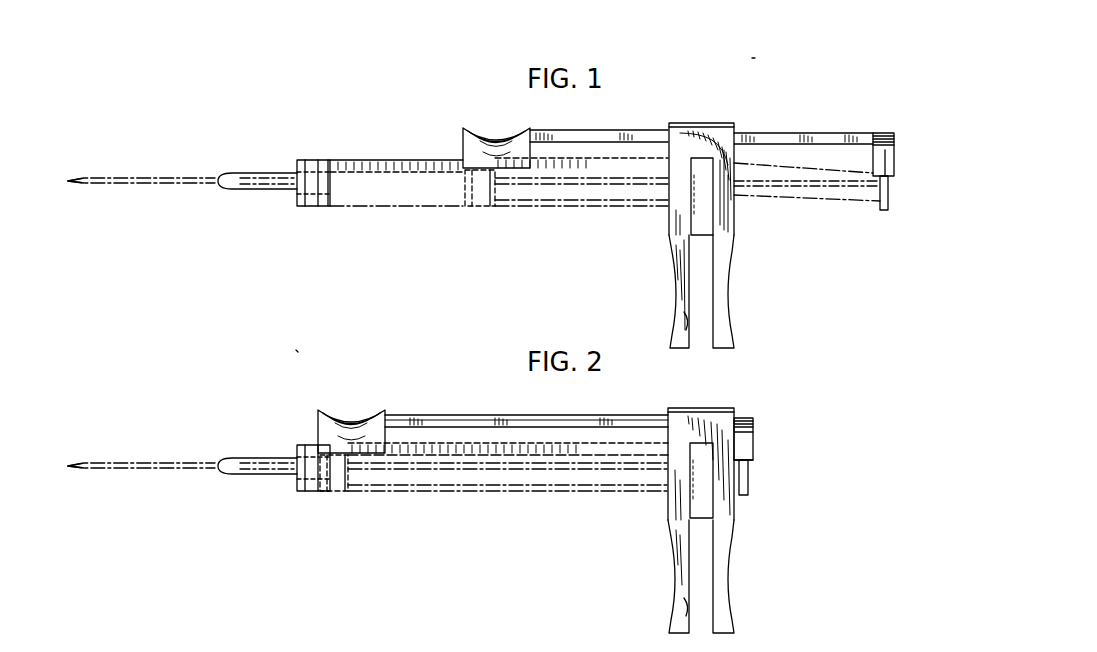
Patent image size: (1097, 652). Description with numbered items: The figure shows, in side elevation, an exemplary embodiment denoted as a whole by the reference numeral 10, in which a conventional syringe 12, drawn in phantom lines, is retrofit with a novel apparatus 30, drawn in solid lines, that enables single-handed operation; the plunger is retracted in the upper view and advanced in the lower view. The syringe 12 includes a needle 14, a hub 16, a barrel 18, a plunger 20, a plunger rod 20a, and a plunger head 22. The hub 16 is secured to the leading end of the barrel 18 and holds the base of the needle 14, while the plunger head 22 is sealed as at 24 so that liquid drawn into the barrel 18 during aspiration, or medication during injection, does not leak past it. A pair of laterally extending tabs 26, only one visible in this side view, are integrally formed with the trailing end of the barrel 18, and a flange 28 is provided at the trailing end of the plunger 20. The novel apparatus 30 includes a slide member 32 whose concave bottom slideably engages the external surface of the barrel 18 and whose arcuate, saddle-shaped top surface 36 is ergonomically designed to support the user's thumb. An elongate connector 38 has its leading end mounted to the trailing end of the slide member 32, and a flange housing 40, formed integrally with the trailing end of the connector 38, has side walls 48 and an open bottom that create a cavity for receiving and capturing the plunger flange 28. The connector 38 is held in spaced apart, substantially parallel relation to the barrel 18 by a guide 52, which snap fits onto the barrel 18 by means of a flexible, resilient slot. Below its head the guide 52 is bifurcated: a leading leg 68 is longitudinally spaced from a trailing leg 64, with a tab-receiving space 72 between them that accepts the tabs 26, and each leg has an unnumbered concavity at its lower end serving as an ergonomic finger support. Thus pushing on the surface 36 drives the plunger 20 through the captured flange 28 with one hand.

In FIG. 1, the exemplary embodiment of the invention 10 is at (762, 52).
In FIG. 2, the exemplary embodiment of the invention 10 is at (298, 352).
In FIG. 1, the syringe 12 is at (340, 150).
In FIG. 2, the syringe 12 is at (452, 490).
In FIG. 1, the needle 14 is at (160, 177).
In FIG. 2, the needle 14 is at (160, 462).
In FIG. 1, the hub 16 is at (274, 176).
In FIG. 2, the hub 16 is at (262, 455).
In FIG. 1, the barrel 18 is at (405, 157).
In FIG. 2, the barrel 18 is at (583, 491).
In FIG. 1, the plunger 20 is at (850, 200).
In FIG. 1, the plunger rod 20a is at (590, 190).
In FIG. 1, the plunger head 22 is at (478, 190).
In FIG. 2, the plunger head 22 is at (330, 482).
In FIG. 1, the seal 24 is at (470, 172).
In FIG. 1, the laterally extending tabs 26 is at (703, 200).
In FIG. 2, the laterally extending tabs 26 is at (700, 490).
In FIG. 1, the flange 28 is at (890, 198).
In FIG. 2, the flange 28 is at (760, 478).
In FIG. 1, the novel apparatus 30 is at (760, 132).
In FIG. 2, the novel apparatus 30 is at (572, 416).
In FIG. 1, the slide member 32 is at (495, 128).
In FIG. 1, the saddle-shaped top surface 36 is at (512, 132).
In FIG. 2, the saddle-shaped top surface 36 is at (355, 410).
In FIG. 1, the elongate connector 38 is at (570, 132).
In FIG. 2, the elongate connector 38 is at (518, 414).
In FIG. 1, the flange housing 40 is at (888, 150).
In FIG. 2, the flange housing 40 is at (755, 424).
In FIG. 1, the side walls 48 is at (888, 132).
In FIG. 2, the side walls 48 is at (762, 448).
In FIG. 1, the guide 52 is at (735, 225).
In FIG. 2, the guide 52 is at (735, 520).
In FIG. 1, the trailing leg 64 is at (728, 300).
In FIG. 2, the trailing leg 64 is at (725, 572).
In FIG. 1, the leading leg 68 is at (677, 292).
In FIG. 2, the leading leg 68 is at (668, 543).
In FIG. 1, the tab-receiving space 72 is at (688, 326).
In FIG. 2, the tab-receiving space 72 is at (688, 614).